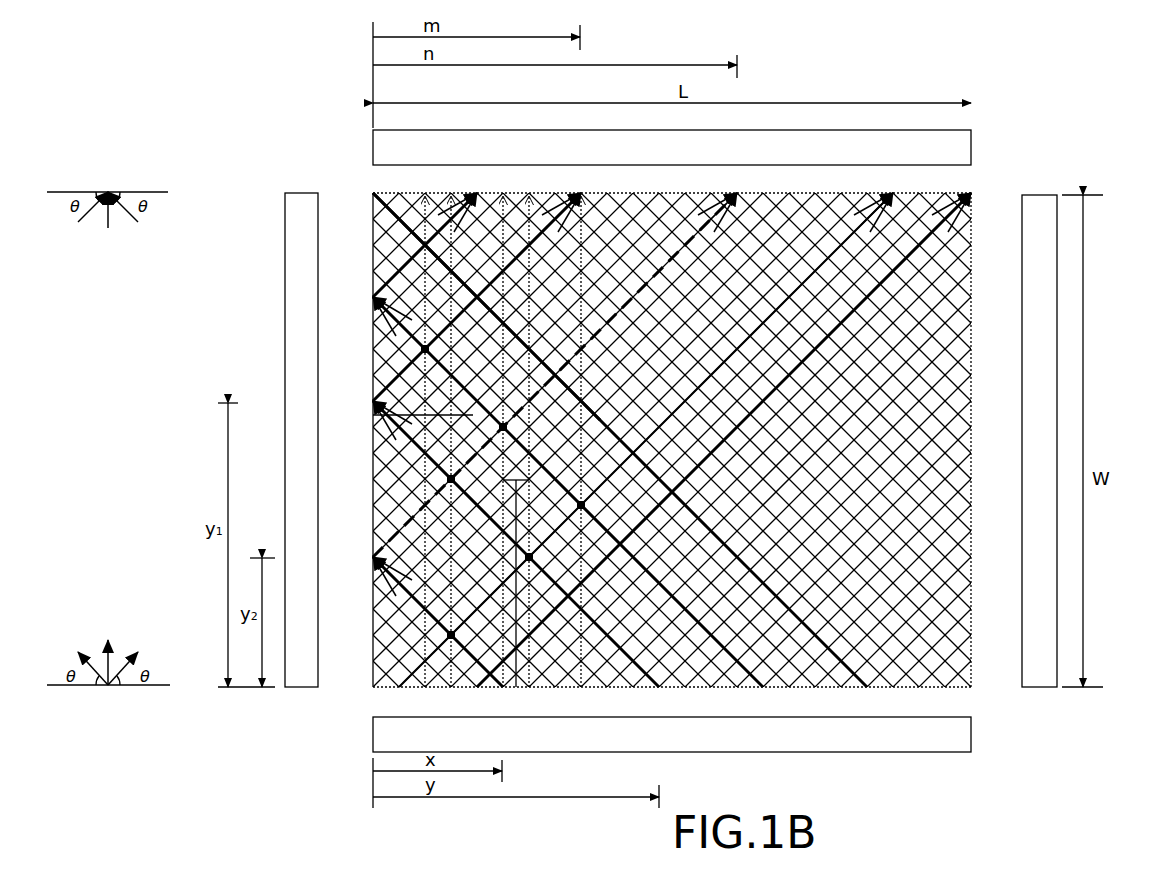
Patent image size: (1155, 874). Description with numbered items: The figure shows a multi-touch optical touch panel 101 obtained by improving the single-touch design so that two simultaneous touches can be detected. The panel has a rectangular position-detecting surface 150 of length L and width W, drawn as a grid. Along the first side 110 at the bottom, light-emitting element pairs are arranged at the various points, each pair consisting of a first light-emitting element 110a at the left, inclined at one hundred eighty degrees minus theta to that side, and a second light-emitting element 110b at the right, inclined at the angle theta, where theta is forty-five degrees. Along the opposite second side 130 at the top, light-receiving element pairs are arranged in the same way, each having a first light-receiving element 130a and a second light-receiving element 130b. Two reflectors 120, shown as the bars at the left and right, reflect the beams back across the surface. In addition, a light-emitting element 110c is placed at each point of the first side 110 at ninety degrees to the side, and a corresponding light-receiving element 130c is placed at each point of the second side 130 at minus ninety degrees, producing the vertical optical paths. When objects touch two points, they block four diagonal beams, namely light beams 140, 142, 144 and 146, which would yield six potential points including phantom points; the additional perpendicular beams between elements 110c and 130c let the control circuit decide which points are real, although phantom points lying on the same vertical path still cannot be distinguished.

The optical touch panel 101 is at (130, 84).
The first side 110 is at (972, 742).
The first light-emitting element 110a is at (78, 652).
The second light-emitting element 110b is at (146, 645).
The light-emitting element 110c is at (108, 640).
The reflector 120 is at (284, 300).
The second side 130 is at (972, 148).
The first light-receiving element 130a is at (82, 216).
The second light-receiving element 130b is at (136, 216).
The light-receiving element 130c is at (108, 228).
The light beam 140 is at (395, 420).
The light beam 142 is at (393, 378).
The light beam 144 is at (853, 233).
The light beam 146 is at (402, 247).
The position-detecting surface 150 is at (972, 397).